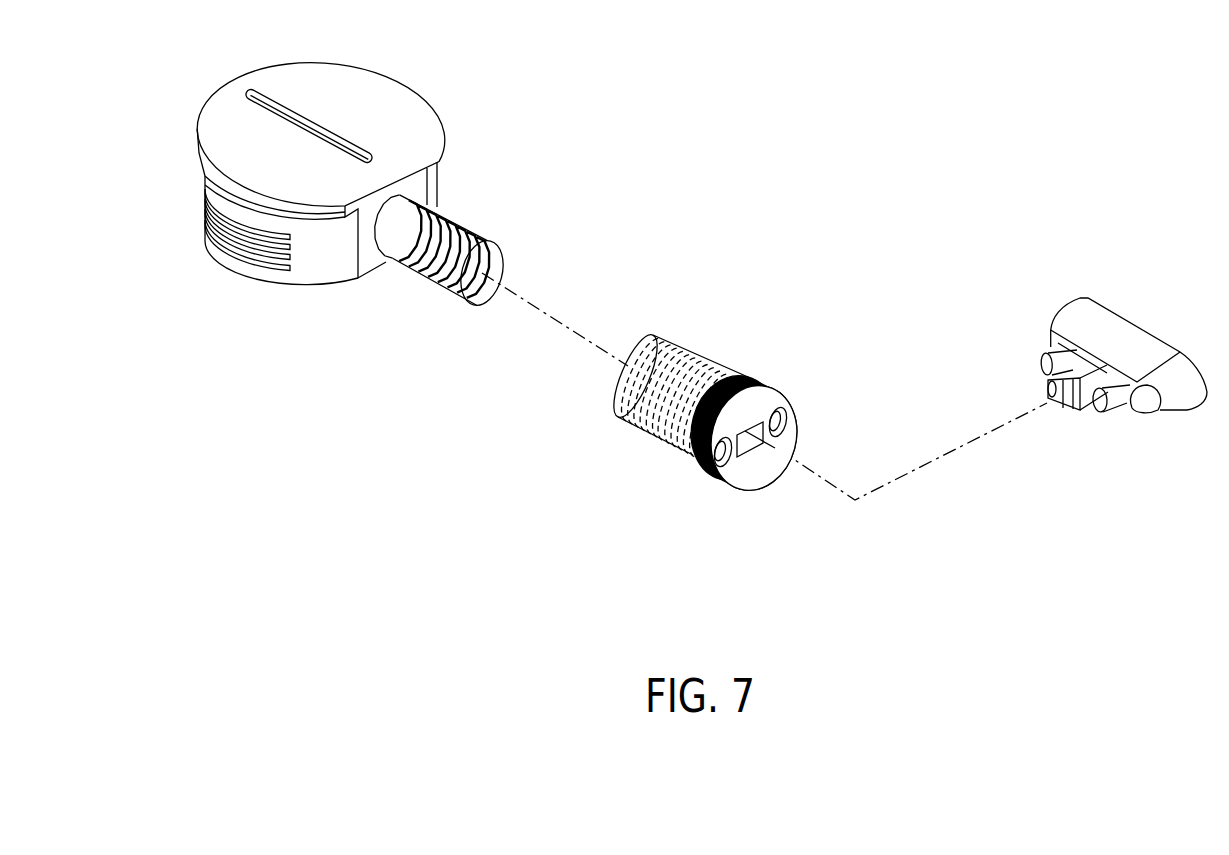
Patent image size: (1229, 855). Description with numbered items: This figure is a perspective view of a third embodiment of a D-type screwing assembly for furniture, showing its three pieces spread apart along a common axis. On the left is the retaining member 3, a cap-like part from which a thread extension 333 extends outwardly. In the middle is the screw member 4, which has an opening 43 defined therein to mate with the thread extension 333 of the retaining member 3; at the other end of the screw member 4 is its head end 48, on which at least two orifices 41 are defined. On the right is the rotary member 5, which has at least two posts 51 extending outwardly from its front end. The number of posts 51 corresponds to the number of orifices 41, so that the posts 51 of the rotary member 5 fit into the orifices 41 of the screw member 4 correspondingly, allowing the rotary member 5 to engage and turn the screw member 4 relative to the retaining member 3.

The retaining member 3 is at (403, 112).
The thread extension 333 is at (420, 287).
The screw member 4 is at (692, 422).
The opening 43 is at (643, 382).
The orifices 41 is at (783, 450).
The head end 48 is at (742, 470).
The rotary member 5 is at (1123, 368).
The posts 51 is at (1073, 381).